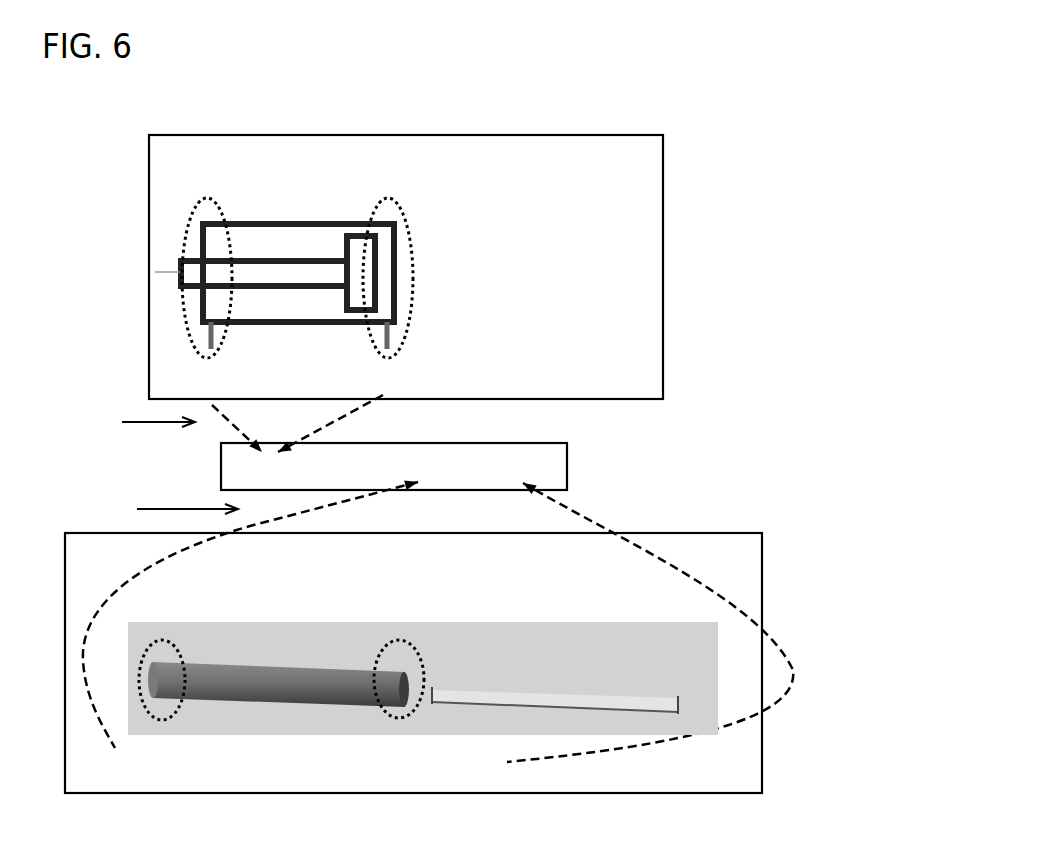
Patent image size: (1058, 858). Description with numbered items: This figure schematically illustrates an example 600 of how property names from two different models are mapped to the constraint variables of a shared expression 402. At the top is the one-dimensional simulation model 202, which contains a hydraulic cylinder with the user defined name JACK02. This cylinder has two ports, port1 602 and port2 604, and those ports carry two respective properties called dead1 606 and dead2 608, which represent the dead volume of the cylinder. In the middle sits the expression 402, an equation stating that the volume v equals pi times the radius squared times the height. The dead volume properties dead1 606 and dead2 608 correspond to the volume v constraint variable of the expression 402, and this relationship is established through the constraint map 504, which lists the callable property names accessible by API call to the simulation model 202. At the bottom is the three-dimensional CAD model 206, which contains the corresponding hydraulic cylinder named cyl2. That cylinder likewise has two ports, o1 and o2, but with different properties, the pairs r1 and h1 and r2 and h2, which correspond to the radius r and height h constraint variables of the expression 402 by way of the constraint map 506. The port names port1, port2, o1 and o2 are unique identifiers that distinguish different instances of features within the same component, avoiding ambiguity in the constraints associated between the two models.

The example of property name mapping 600 is at (703, 62).
The 1D simulation model 202 is at (641, 154).
The port1 602 is at (184, 240).
The port2 604 is at (410, 240).
The dead1 606 is at (210, 302).
The dead2 608 is at (393, 302).
The constraint map 504 is at (229, 423).
The expression 402 is at (221, 462).
The constraint map 506 is at (438, 621).
The 3D CAD model 206 is at (678, 548).